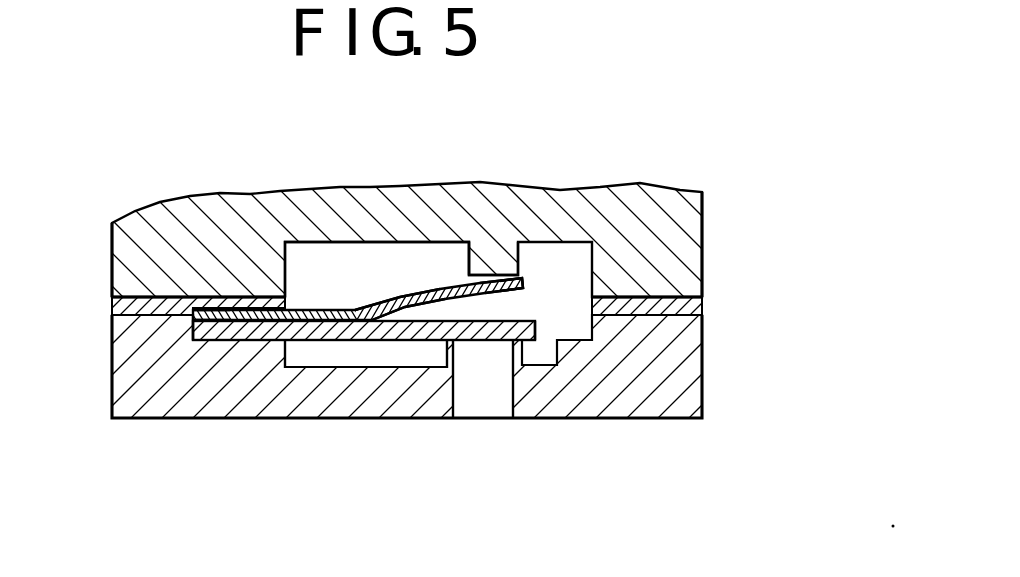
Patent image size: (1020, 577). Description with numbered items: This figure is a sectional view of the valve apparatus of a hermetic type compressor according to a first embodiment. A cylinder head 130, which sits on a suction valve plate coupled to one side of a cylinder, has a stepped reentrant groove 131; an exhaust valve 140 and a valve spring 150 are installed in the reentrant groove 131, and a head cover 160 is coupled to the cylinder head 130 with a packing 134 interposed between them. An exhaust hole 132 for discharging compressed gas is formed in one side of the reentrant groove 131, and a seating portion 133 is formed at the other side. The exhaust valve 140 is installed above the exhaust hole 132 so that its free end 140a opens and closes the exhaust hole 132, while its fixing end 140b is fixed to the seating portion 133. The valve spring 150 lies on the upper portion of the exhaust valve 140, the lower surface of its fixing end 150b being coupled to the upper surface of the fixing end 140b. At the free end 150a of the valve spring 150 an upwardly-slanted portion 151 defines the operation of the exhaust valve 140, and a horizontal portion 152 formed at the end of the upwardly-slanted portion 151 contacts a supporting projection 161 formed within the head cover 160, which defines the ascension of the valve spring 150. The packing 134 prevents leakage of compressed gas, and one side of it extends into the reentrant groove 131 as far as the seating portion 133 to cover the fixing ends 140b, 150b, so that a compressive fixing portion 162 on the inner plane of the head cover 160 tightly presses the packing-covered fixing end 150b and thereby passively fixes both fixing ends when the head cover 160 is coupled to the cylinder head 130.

The cylinder head 130 is at (676, 393).
The stepped reentrant groove 131 is at (410, 352).
The exhaust hole 132 is at (475, 397).
The seating portion 133 is at (242, 335).
The packing 134 is at (713, 306).
The exhaust valve 140 is at (337, 341).
The free end of exhaust valve 140a is at (540, 331).
The fixing end of exhaust valve 140b is at (210, 344).
The valve spring 150 is at (340, 311).
The free end of valve spring 150a is at (527, 280).
The fixing end of valve spring 150b is at (207, 299).
The upwardly-slanted portion 151 is at (412, 300).
The horizontal portion 152 is at (504, 294).
The head cover 160 is at (660, 205).
The supporting projection 161 is at (494, 256).
The compressive fixing portion 162 is at (262, 277).